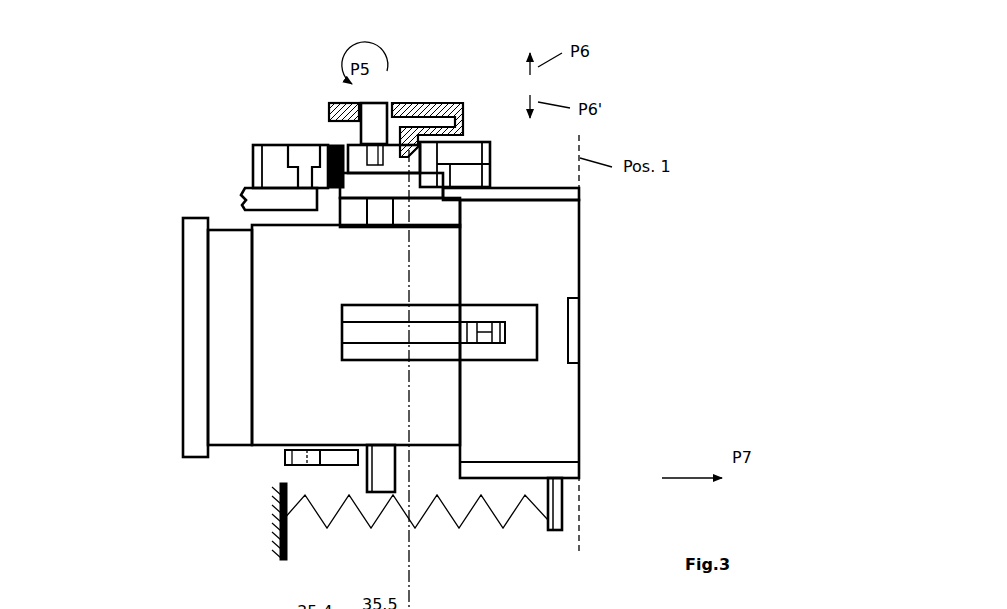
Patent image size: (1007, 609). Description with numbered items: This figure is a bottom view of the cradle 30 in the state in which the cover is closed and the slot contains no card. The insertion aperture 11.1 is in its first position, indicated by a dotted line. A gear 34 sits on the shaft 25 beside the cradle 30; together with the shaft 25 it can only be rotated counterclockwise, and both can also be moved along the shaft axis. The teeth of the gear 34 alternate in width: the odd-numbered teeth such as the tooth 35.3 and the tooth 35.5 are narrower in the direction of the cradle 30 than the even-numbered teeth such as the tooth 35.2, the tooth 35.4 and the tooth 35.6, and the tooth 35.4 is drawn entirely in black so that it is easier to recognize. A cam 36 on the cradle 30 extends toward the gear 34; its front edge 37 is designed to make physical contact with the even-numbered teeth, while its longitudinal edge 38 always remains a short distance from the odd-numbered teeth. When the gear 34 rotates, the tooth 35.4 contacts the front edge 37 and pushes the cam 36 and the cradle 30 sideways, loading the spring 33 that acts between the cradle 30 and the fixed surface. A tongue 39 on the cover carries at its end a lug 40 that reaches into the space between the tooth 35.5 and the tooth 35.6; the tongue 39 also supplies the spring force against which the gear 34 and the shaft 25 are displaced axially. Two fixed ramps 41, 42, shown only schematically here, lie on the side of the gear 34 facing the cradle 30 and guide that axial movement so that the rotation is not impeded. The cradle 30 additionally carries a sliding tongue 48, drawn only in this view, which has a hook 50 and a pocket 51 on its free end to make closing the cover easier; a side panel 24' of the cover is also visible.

The insertion aperture 11.1 is at (172, 260).
The cradle 30 is at (297, 426).
The gear 34 is at (197, 140).
The even-numbered tooth 35.2 is at (272, 152).
The odd-numbered tooth 35.3 is at (305, 157).
The even-numbered tooth 35.4 is at (335, 140).
The odd-numbered tooth 35.5 is at (517, 268).
The even-numbered tooth 35.6 is at (440, 150).
The fixed ramp 41 is at (188, 174).
The fixed ramp 42 is at (255, 195).
The side panel 24' is at (344, 93).
The tongue 39 is at (443, 108).
The lug 40 is at (410, 127).
The front edge 37 is at (504, 283).
The cam 36 is at (425, 194).
The longitudinal edge 38 is at (445, 190).
The hook 50 is at (285, 458).
The pocket 51 is at (250, 491).
The sliding tongue 48 is at (367, 478).
The shaft 25 is at (280, 513).
The spring 33 is at (512, 515).